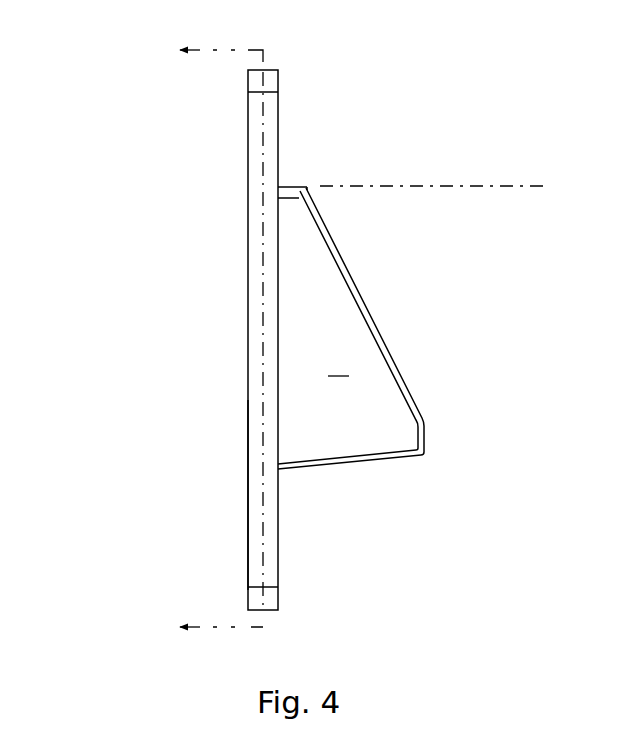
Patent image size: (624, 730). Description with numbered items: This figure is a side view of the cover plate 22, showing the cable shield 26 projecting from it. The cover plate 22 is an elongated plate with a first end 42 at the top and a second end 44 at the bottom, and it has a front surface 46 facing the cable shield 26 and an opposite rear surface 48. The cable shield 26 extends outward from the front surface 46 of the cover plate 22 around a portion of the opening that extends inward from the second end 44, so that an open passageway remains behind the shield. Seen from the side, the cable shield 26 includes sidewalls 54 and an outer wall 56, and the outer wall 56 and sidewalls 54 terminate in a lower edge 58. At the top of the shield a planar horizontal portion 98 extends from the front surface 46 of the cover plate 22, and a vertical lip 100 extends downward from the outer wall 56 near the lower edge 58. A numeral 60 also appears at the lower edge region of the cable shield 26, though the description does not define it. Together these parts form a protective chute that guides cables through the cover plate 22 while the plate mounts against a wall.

The cover plate 22 is at (88, 179).
The cable shield 26 is at (442, 349).
The first end 42 is at (267, 70).
The second end 44 is at (268, 611).
The front surface 46 is at (282, 113).
The rear surface 48 is at (245, 563).
The sidewalls 54 is at (314, 331).
The outer wall 56 is at (367, 305).
The lower edge 58 is at (365, 470).
The lower edge 60 is at (352, 473).
The planar horizontal portion 98 is at (287, 187).
The vertical lip 100 is at (426, 450).